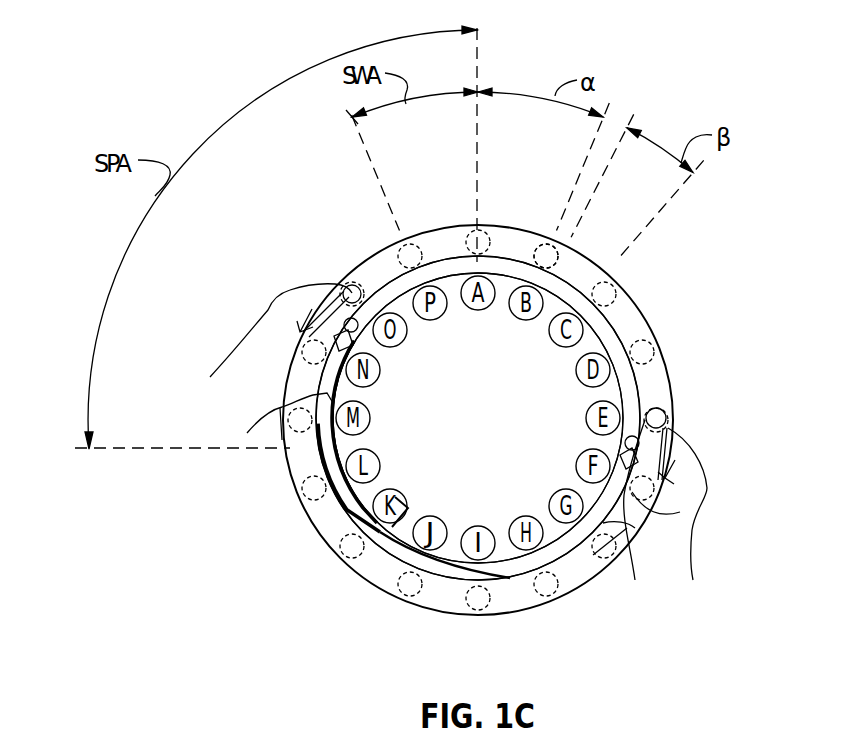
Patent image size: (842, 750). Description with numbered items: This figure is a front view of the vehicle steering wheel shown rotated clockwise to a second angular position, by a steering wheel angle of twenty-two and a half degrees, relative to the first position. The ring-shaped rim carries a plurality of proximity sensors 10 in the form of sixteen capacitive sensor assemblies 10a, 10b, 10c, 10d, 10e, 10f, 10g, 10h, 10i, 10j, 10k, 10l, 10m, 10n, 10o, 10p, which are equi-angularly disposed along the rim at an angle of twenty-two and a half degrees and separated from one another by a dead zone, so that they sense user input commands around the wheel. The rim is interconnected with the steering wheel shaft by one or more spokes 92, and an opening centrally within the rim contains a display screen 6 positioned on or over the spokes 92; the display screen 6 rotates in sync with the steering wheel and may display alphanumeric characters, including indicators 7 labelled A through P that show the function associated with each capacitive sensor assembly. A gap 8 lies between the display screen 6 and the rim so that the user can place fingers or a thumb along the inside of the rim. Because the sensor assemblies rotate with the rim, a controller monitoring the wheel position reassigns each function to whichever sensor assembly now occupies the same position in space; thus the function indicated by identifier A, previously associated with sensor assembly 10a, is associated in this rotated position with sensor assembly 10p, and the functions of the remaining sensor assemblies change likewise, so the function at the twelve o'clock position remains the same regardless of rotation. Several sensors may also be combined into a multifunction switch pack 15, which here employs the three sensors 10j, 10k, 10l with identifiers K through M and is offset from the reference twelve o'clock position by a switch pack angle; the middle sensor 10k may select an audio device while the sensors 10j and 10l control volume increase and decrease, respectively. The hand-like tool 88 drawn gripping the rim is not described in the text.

The display screen 6 is at (470, 335).
The indicators 7 is at (402, 298).
The gap 8 is at (622, 342).
The proximity sensors 10 is at (542, 240).
The capacitive sensor assembly 10a is at (580, 247).
The capacitive sensor assembly 10b is at (618, 292).
The capacitive sensor assembly 10c is at (657, 350).
The capacitive sensor assembly 10d is at (670, 408).
The capacitive sensor assembly 10e is at (656, 496).
The capacitive sensor assembly 10f is at (612, 560).
The capacitive sensor assembly 10g is at (548, 600).
The capacitive sensor assembly 10h is at (476, 612).
The capacitive sensor assembly 10i is at (402, 588).
The capacitive sensor assembly 10j is at (338, 549).
The capacitive sensor assembly 10k is at (300, 495).
The capacitive sensor assembly 10l is at (286, 432).
The capacitive sensor assembly 10m is at (302, 352).
The capacitive sensor assembly 10n is at (358, 272).
The capacitive sensor assembly 10o is at (412, 245).
The capacitive sensor assembly 10p is at (492, 237).
The multifunction switch pack 15 is at (387, 480).
The tool 88 is at (288, 293).
The spokes 92 is at (312, 391).